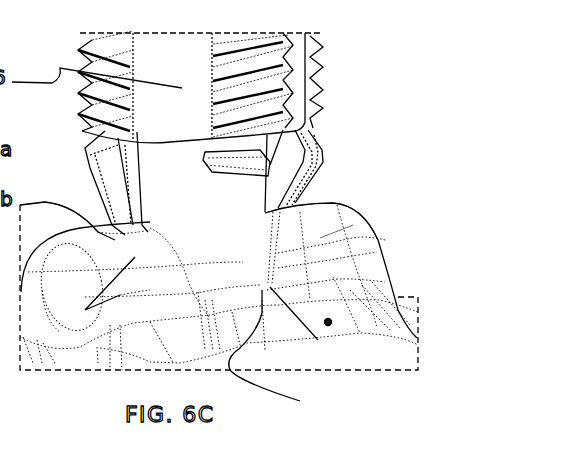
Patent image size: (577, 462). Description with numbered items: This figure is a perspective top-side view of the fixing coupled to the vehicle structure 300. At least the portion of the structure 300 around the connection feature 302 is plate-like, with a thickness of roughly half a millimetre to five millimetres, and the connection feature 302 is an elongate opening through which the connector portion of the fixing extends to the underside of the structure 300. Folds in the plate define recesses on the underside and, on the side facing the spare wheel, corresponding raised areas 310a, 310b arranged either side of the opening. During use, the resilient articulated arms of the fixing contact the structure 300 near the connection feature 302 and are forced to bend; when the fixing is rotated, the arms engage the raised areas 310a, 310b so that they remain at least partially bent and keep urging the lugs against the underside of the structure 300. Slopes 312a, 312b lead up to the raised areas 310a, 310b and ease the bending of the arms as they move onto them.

The raised area 310a is at (55, 230).
The raised area 310b is at (300, 208).
The slope 312a is at (112, 318).
The slope 312b is at (320, 238).
The structure 300 is at (331, 321).
The connection feature 302 is at (233, 370).